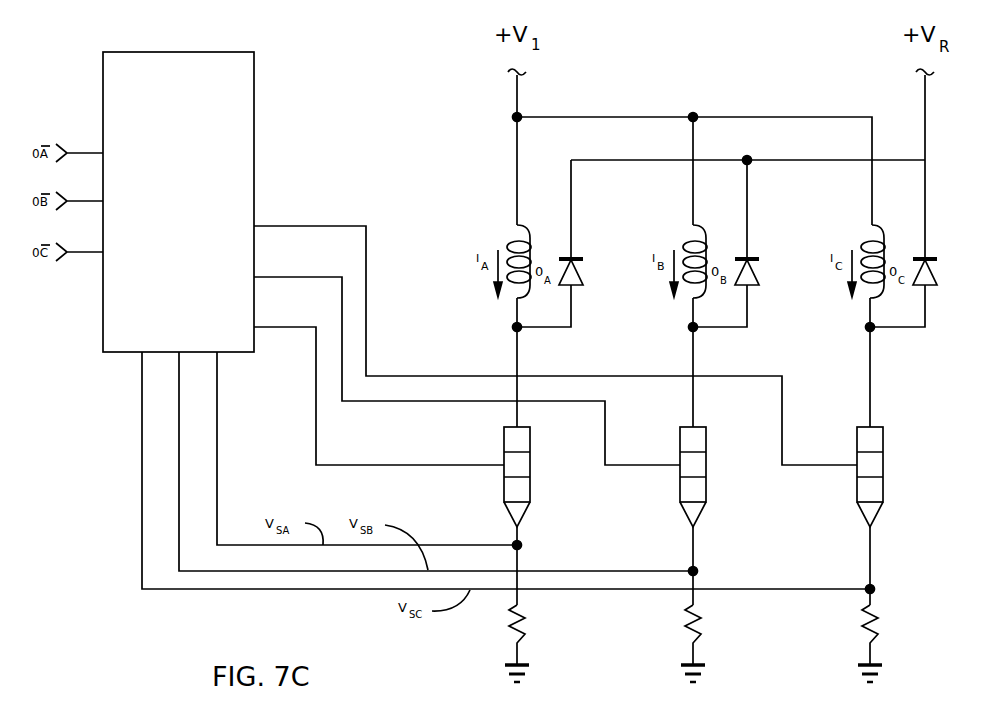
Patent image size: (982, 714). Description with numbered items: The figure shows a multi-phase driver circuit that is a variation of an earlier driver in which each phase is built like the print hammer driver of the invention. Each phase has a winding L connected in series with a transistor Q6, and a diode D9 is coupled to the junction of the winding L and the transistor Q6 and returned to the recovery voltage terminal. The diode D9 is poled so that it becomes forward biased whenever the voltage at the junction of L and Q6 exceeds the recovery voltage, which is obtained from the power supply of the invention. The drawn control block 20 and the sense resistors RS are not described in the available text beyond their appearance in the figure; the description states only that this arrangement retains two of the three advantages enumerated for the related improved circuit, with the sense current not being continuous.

The PWM control 20 is at (200, 50).
The winding L is at (533, 252).
The diode D9 is at (580, 278).
The transistor Q6 is at (532, 470).
The sense resistor RS is at (890, 630).